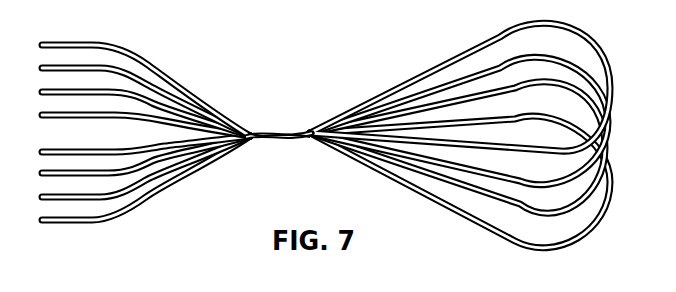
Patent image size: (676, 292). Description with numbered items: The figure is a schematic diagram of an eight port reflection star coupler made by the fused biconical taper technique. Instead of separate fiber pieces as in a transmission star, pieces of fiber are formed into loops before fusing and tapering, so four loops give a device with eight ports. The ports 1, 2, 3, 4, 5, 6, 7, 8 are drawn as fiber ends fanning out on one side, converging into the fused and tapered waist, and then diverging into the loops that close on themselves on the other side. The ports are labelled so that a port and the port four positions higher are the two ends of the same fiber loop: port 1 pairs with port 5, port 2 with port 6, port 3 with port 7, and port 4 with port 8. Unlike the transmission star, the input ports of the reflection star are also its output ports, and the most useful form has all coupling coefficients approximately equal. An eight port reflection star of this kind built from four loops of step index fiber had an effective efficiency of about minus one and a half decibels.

The port 1 is at (137, 84).
The port 2 is at (137, 96).
The port 3 is at (137, 108).
The port 4 is at (137, 119).
The port 5 is at (137, 150).
The port 6 is at (137, 160).
The port 7 is at (137, 172).
The port 8 is at (137, 184).